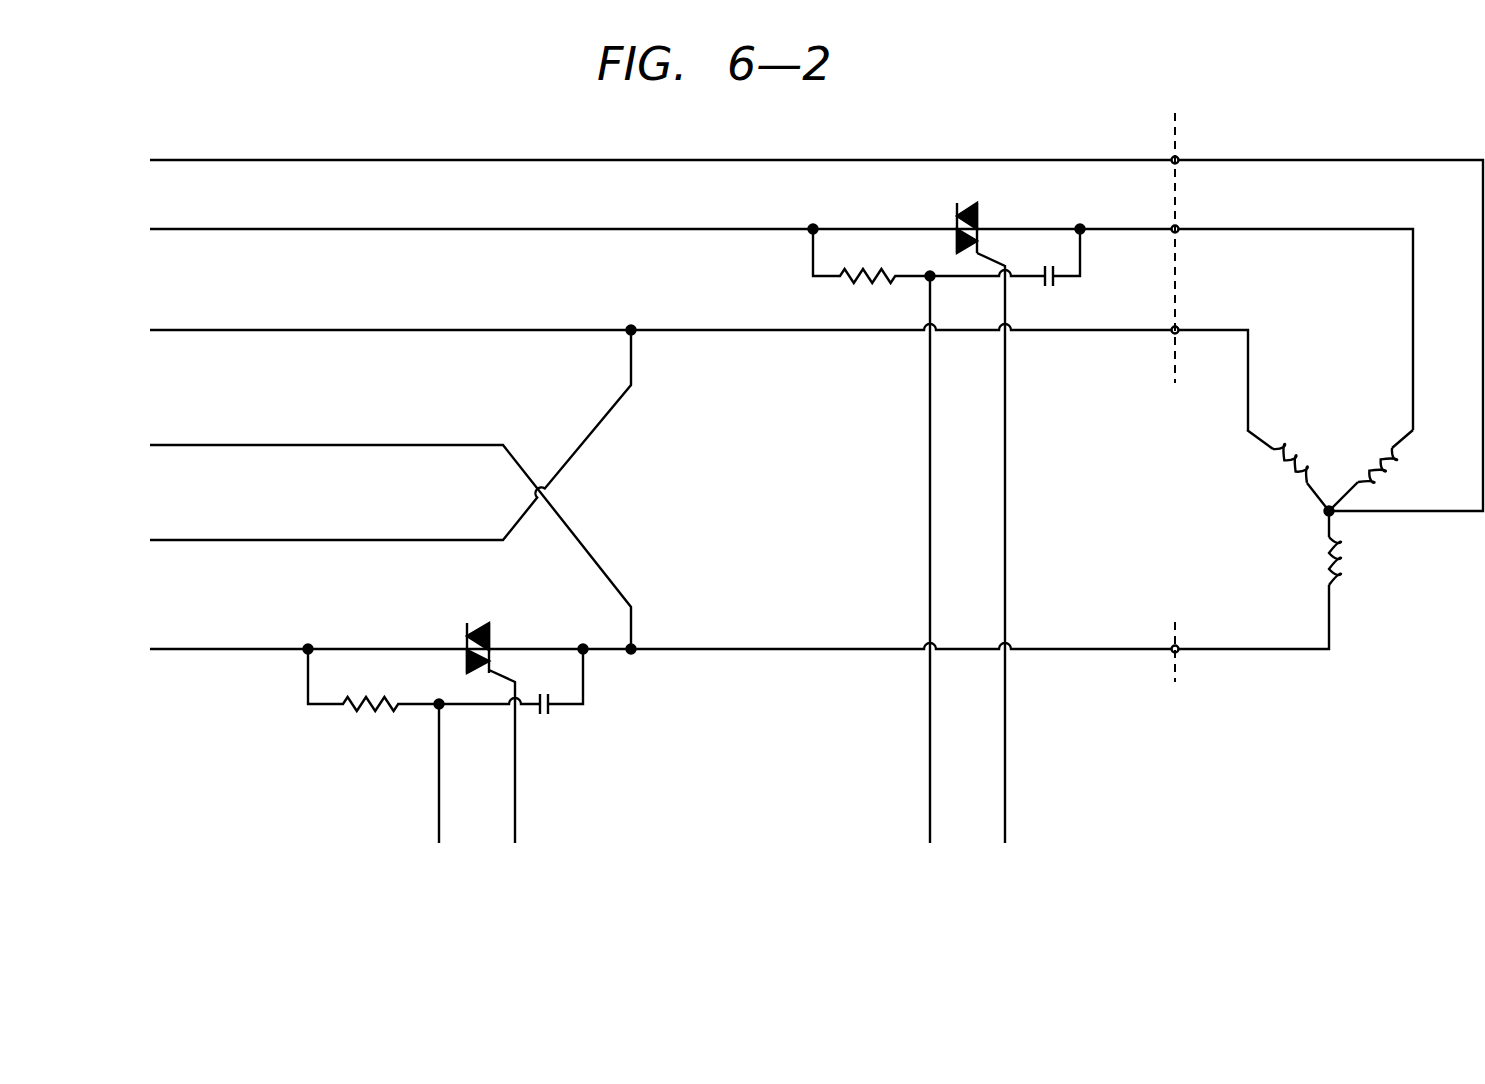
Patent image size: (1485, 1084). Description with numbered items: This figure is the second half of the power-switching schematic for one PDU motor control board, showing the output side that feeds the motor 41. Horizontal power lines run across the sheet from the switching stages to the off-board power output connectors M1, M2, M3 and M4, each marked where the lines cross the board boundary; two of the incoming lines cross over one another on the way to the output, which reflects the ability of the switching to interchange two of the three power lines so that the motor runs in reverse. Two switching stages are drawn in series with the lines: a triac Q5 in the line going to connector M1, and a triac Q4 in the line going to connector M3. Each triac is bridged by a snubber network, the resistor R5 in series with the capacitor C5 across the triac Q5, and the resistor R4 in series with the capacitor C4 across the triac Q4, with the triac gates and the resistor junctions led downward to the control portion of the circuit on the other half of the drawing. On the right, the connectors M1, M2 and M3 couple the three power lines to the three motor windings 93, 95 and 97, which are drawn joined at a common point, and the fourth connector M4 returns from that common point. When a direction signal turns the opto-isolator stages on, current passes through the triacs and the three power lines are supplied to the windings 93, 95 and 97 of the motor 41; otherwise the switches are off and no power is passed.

The motor 41 is at (1352, 525).
The motor winding 93 is at (1364, 463).
The motor winding 95 is at (1305, 452).
The motor winding 97 is at (1340, 560).
The triac Q4 is at (477, 717).
The triac Q5 is at (967, 506).
The resistor R4 is at (376, 698).
The resistor R5 is at (872, 272).
The capacitor C4 is at (511, 698).
The capacitor C5 is at (1007, 272).
The power output connector M1 is at (781, 314).
The power output connector M2 is at (699, 365).
The power output connector M3 is at (739, 619).
The power output connector M4 is at (816, 321).